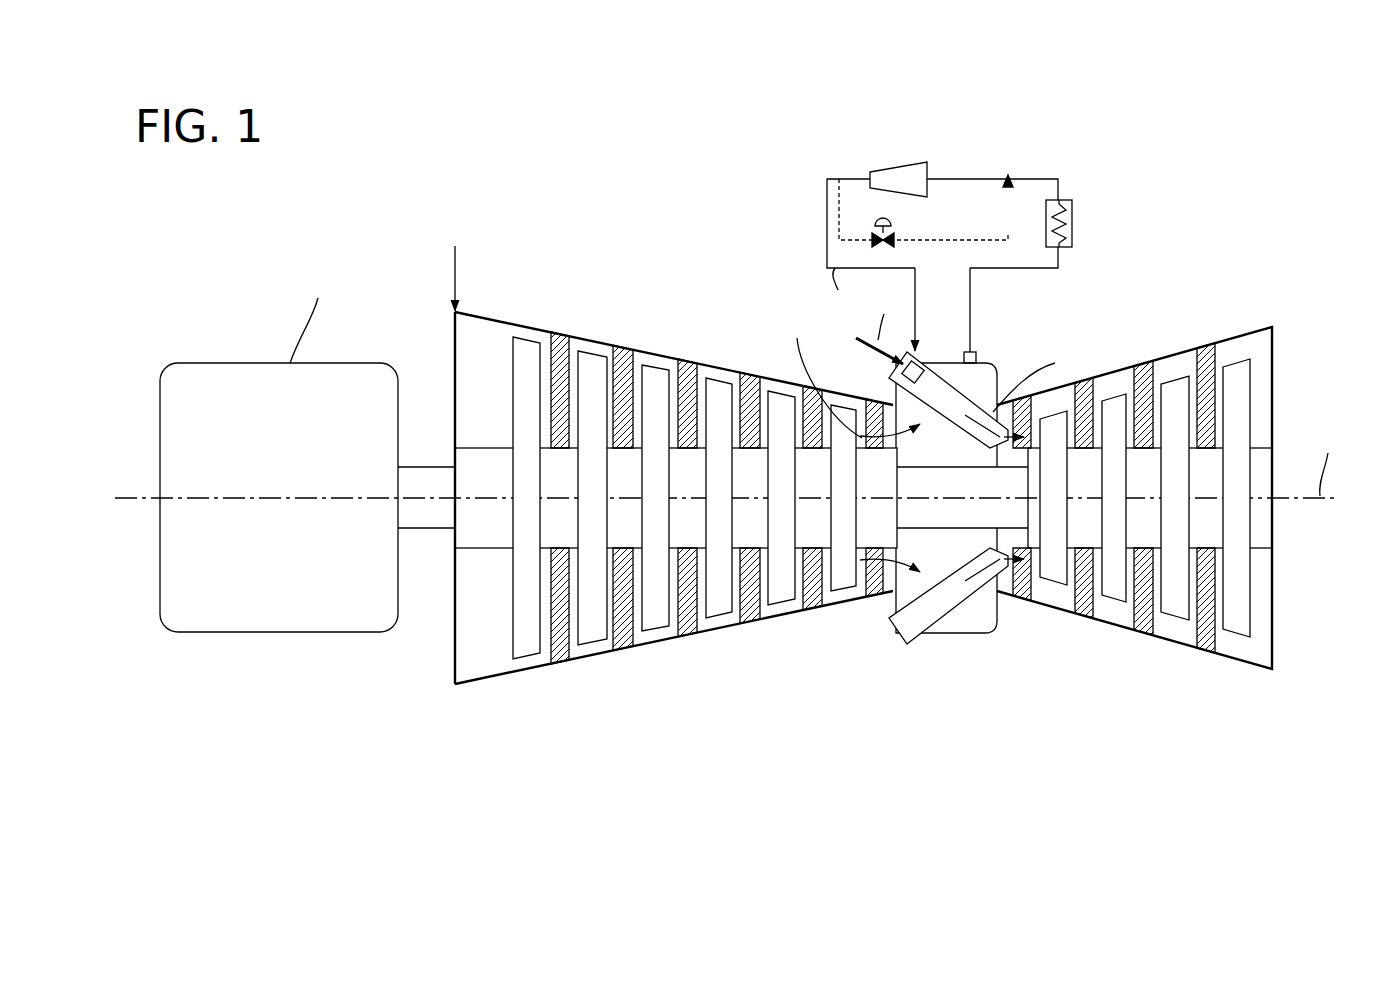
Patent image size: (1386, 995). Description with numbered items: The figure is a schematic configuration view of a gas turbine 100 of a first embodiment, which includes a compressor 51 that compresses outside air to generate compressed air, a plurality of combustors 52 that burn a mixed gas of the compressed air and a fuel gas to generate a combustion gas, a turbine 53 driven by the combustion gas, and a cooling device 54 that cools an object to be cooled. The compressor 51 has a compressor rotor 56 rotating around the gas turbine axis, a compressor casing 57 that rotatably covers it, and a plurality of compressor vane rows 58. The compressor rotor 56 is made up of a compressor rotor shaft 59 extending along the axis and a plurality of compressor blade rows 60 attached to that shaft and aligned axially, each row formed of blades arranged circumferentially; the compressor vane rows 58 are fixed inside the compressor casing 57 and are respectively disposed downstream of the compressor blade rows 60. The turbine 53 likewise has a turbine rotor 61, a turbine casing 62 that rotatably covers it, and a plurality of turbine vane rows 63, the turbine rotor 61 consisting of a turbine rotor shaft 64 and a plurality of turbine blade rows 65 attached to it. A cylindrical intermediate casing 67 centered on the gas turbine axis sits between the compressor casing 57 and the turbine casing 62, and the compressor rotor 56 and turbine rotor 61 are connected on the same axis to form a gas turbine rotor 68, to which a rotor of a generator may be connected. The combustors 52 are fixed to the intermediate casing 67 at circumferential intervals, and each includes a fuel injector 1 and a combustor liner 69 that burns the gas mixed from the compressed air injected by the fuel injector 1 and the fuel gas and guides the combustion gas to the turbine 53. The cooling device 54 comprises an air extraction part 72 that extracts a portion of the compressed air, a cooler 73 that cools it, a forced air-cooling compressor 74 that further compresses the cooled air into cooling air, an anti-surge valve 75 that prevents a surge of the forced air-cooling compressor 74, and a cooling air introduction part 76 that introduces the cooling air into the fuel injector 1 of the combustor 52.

The gas turbine 100 is at (455, 143).
The compressor 51 is at (625, 181).
The compressor casing 57 is at (505, 322).
The compressor rotor 56 is at (613, 482).
The compressor rotor shaft 59 is at (493, 540).
The compressor blade rows 60 is at (527, 640).
The compressor vane rows 58 is at (628, 640).
The gas turbine rotor 68 is at (468, 556).
The combustor 52 is at (1012, 308).
The intermediate casing 67 is at (983, 362).
The combustor liner 69 is at (925, 362).
The fuel injector 1 is at (900, 376).
The air extraction part 72 is at (968, 352).
The turbine 53 is at (1112, 212).
The turbine casing 62 is at (1168, 352).
The turbine rotor 61 is at (1112, 470).
The turbine rotor shaft 64 is at (1256, 520).
The turbine blade rows 65 is at (1170, 612).
The turbine vane rows 63 is at (1082, 605).
The cooling device 54 is at (1020, 154).
The forced air-cooling compressor 74 is at (890, 170).
The cooler 73 is at (1069, 213).
The anti-surge valve 75 is at (892, 225).
The cooling air introduction part 76 is at (827, 227).